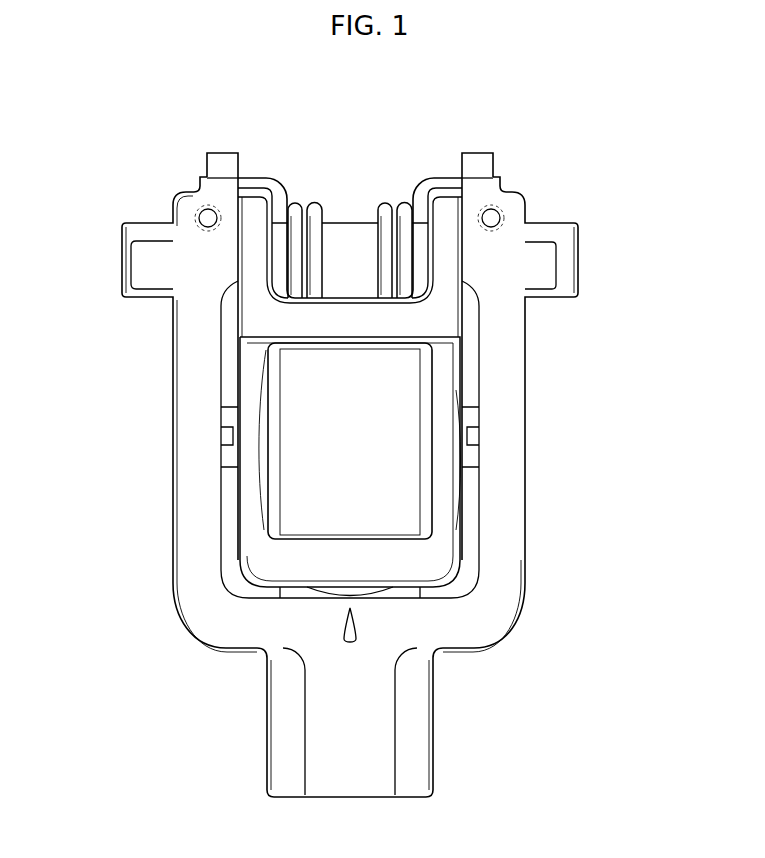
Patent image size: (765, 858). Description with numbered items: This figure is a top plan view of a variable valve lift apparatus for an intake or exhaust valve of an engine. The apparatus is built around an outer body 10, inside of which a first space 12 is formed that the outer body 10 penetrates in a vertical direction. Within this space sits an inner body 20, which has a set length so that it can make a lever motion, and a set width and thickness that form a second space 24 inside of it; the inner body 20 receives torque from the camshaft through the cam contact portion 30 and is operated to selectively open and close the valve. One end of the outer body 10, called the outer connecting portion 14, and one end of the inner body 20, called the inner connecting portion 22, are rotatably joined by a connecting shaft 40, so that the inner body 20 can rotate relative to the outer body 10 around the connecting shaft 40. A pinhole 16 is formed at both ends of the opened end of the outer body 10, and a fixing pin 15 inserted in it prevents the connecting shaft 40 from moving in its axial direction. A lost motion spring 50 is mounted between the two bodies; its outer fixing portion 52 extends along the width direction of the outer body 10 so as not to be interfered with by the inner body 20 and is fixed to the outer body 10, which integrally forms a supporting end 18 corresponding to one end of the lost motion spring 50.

The outer body 10 is at (500, 437).
The first space 12 is at (238, 391).
The outer connecting portion 14 is at (180, 203).
The fixing pin 15 is at (209, 216).
The pinhole 16 is at (500, 213).
The supporting end 18 is at (478, 160).
The inner body 20 is at (455, 370).
The inner connecting portion 22 is at (253, 207).
The second space 24 is at (283, 512).
The cam contact portion 30 is at (405, 508).
The connecting shaft 40 is at (562, 237).
The lost motion spring 50 is at (381, 207).
The outer fixing portion 52 is at (437, 187).